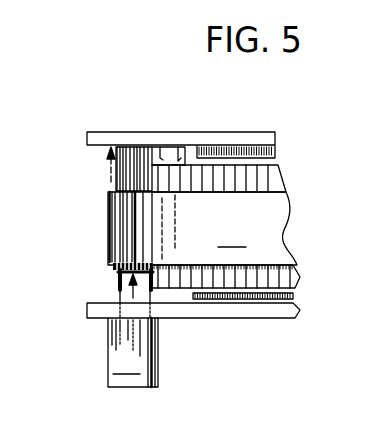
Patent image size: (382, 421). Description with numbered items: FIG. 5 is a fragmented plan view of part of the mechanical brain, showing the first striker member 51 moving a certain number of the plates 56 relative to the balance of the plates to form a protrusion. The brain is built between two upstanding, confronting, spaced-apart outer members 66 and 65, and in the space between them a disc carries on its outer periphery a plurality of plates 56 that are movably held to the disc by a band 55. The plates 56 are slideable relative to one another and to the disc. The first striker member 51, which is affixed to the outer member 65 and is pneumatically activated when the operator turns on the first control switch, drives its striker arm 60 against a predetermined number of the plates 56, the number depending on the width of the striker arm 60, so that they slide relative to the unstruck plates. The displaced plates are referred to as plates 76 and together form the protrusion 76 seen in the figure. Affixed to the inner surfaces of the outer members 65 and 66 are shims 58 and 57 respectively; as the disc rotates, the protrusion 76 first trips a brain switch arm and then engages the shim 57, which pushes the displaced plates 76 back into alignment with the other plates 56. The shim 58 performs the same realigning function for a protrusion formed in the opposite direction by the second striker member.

The first striker member 51 is at (133, 338).
The band 55 is at (202, 228).
The plates 56 is at (275, 178).
The shim 57 is at (234, 152).
The shim 58 is at (268, 300).
The striker arm 60 is at (118, 283).
The outer member 65 is at (87, 309).
The outer member 66 is at (87, 137).
The displaced plates (protrusion) 76 is at (132, 153).